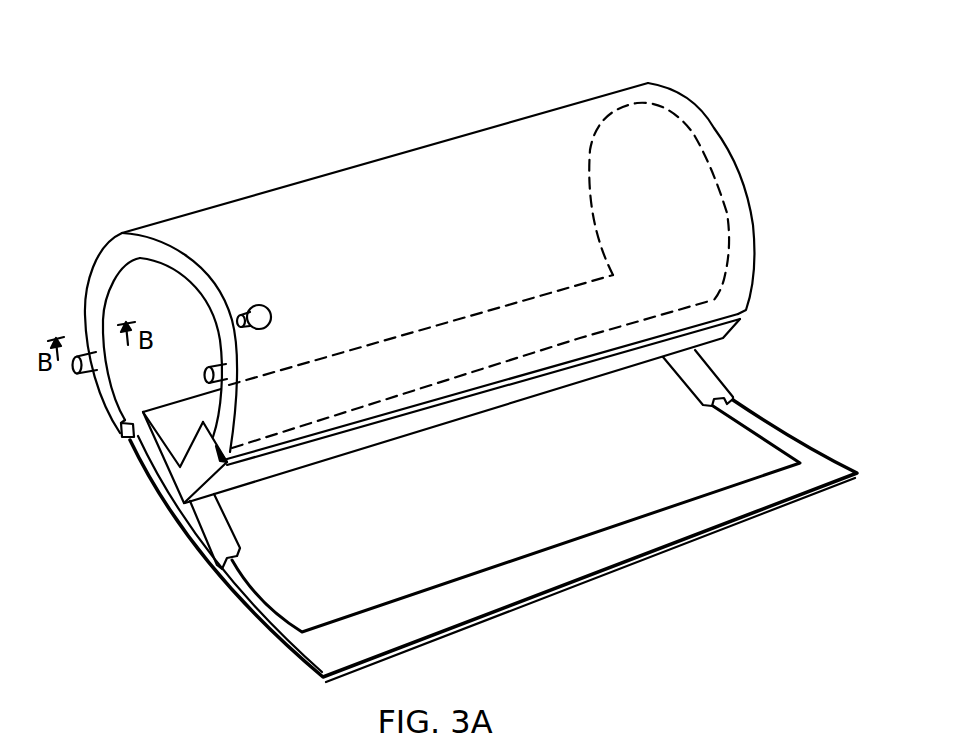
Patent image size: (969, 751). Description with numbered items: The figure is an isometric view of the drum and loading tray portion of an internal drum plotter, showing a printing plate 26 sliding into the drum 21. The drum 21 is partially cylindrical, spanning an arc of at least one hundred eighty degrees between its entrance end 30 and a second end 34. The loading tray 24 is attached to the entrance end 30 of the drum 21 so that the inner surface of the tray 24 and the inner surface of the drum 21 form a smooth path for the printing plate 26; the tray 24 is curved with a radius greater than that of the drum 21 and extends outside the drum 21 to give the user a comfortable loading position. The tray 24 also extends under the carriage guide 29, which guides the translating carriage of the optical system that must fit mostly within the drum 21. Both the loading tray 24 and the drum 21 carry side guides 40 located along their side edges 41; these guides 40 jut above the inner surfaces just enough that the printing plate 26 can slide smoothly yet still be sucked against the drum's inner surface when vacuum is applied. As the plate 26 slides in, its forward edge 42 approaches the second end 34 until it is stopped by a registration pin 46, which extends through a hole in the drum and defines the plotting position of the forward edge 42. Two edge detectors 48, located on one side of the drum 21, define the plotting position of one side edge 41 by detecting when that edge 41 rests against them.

The drum 21 is at (692, 178).
The side edges 41 is at (675, 87).
The forward edge 42 is at (310, 420).
The second end 34 is at (247, 463).
The edge detectors 48 is at (88, 357).
The registration pin 46 is at (267, 303).
The side guides 40 is at (703, 377).
The entrance end 30 is at (132, 442).
The carriage guide 29 is at (182, 485).
The printing plate 26 is at (268, 575).
The loading tray 24 is at (320, 660).